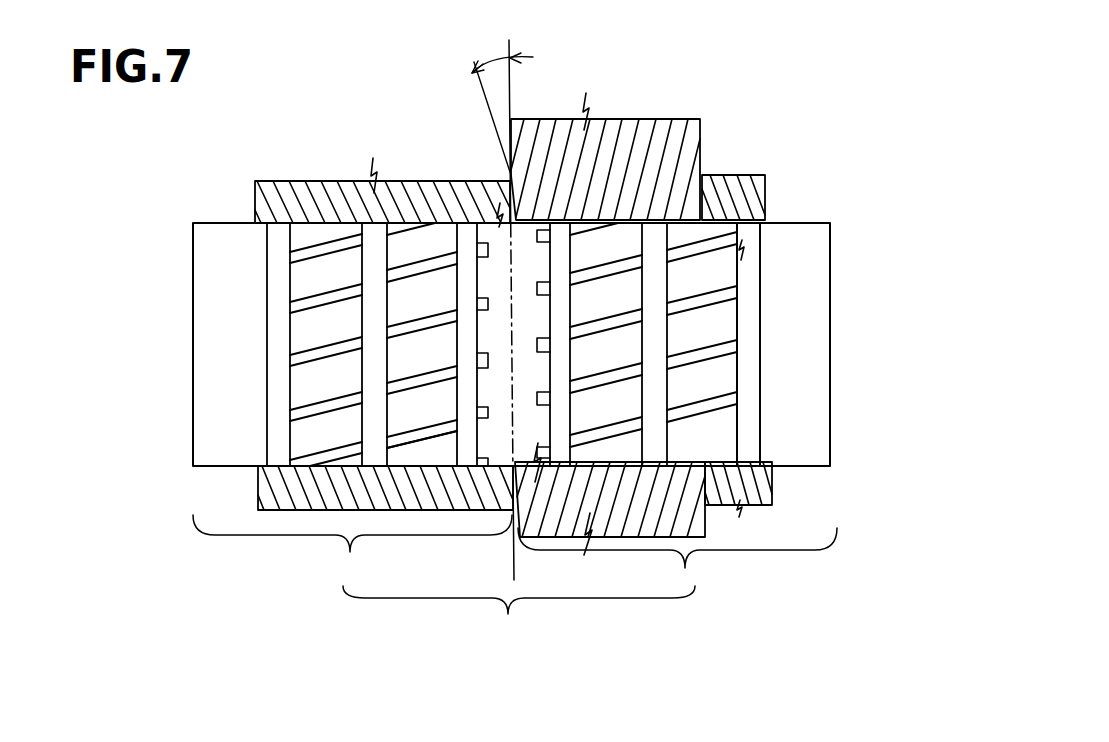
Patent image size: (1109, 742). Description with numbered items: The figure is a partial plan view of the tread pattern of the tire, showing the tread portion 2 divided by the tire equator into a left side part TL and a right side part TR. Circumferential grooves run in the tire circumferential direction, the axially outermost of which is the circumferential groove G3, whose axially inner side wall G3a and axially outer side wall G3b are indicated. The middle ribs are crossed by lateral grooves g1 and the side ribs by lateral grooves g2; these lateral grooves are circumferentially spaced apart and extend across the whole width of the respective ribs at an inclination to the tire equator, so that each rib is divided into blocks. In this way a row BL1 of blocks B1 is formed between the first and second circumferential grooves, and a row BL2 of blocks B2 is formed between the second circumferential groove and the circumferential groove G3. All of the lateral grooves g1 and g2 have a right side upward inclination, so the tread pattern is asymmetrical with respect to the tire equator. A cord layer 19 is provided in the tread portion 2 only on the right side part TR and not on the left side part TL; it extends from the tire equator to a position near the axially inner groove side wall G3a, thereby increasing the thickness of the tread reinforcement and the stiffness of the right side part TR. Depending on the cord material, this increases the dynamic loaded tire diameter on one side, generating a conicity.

The cord layer 19 is at (680, 127).
The lateral groove g2 is at (315, 233).
The block B2 is at (337, 260).
The lateral groove g1 is at (412, 257).
The block B1 is at (433, 282).
The axially inner side wall of circumferential groove G3 G3a is at (739, 266).
The circumferential groove G3 is at (748, 232).
The axially outer side wall of circumferential groove G3 G3b is at (756, 302).
The left side part of the tread portion TL is at (352, 549).
The right side part of the tread portion TR is at (677, 563).
The tread portion 2 is at (519, 617).
The row of blocks B2 BL2 is at (325, 462).
The row of blocks B1 BL1 is at (427, 452).